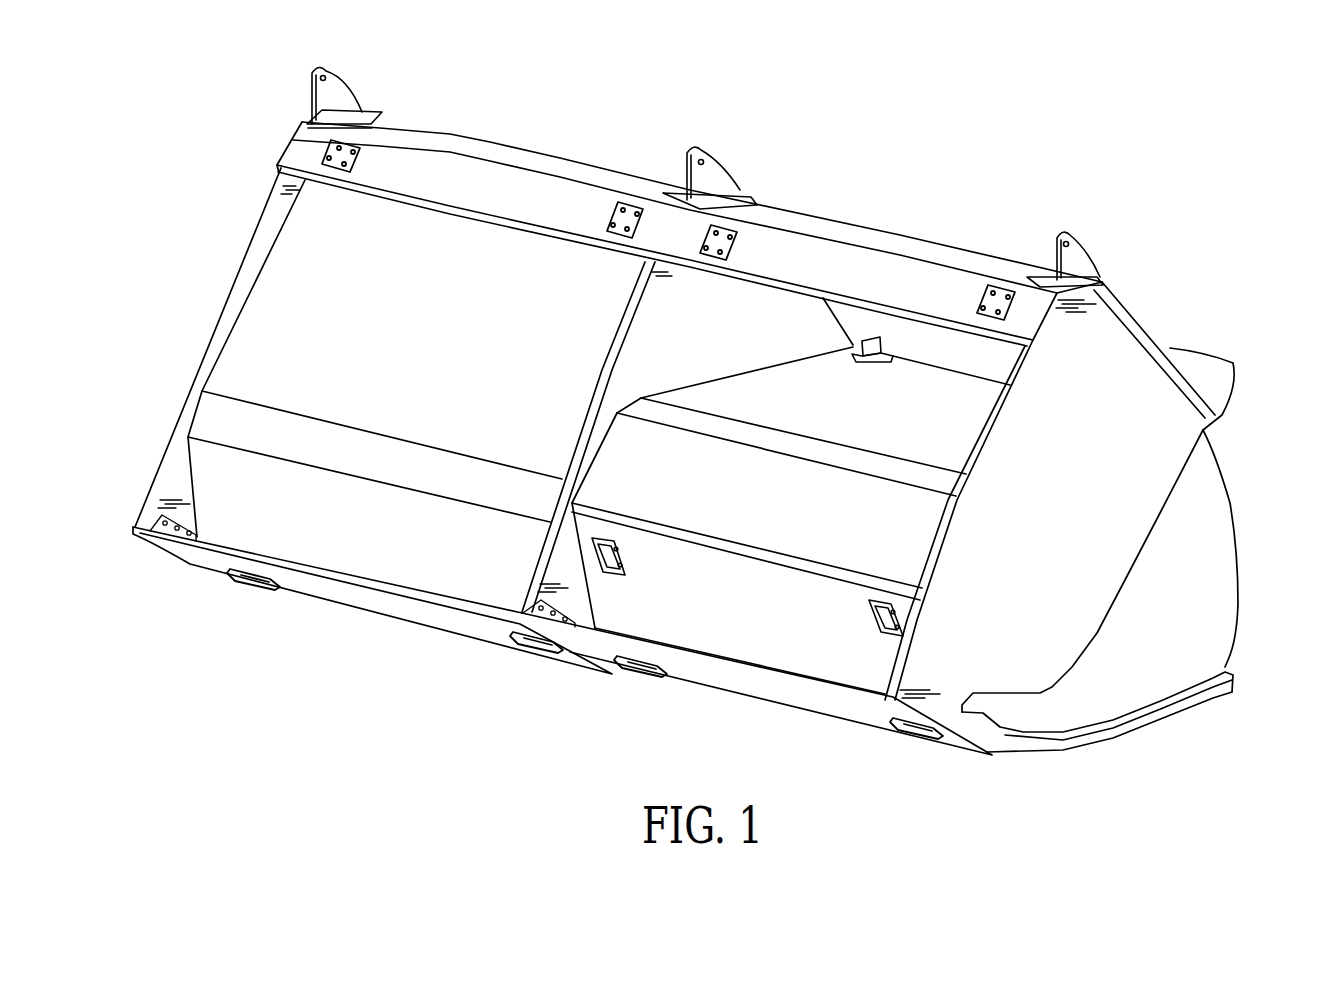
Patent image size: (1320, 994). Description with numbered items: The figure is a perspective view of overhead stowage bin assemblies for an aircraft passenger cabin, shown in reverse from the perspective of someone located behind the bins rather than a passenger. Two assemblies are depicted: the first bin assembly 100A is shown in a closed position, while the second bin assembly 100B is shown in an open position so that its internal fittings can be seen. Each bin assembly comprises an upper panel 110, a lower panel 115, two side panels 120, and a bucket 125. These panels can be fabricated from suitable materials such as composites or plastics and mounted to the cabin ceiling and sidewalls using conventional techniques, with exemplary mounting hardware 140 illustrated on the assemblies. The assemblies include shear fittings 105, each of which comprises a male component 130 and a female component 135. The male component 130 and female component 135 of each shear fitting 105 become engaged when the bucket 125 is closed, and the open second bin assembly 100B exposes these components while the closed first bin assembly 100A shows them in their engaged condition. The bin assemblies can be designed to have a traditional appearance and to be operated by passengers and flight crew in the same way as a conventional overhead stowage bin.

The first bin assembly 100A is at (568, 108).
The second bin assembly 100B is at (940, 188).
The shear fitting 105 is at (368, 172).
The upper panel 110 is at (955, 248).
The lower panel 115 is at (775, 697).
The side panel 120 is at (1187, 423).
The bucket 125 is at (1135, 736).
The male component 130 is at (873, 358).
The female component 135 is at (704, 260).
The mounting hardware 140 is at (332, 92).